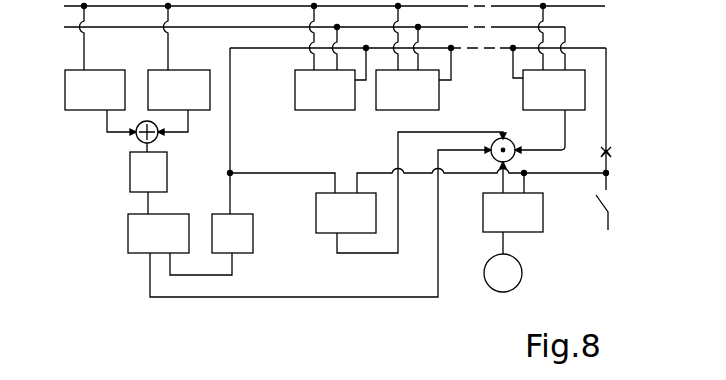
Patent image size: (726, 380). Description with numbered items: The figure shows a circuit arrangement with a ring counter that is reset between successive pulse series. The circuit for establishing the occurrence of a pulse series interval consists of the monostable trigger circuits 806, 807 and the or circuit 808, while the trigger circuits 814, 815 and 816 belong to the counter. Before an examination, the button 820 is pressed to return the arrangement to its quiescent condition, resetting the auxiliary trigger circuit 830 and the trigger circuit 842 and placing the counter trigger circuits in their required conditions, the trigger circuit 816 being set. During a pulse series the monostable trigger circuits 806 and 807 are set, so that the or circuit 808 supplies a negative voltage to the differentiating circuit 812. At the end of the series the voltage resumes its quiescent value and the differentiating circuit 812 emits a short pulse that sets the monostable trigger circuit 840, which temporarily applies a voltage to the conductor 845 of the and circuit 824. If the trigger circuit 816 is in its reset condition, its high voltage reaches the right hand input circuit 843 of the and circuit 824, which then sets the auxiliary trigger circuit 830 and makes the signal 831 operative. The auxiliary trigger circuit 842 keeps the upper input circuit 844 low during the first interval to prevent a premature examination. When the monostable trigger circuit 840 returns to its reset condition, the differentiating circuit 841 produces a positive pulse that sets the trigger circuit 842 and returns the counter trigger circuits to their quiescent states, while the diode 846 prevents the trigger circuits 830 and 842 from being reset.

The monostable trigger circuit 806 is at (95, 57).
The monostable trigger circuit 807 is at (179, 57).
The or circuit 808 is at (146, 132).
The differentiating circuit 812 is at (148, 183).
The trigger circuit 814 is at (332, 57).
The trigger circuit 815 is at (415, 57).
The trigger circuit 816 is at (548, 57).
The button 820 is at (596, 196).
The and circuit 824 is at (517, 160).
The auxiliary trigger circuit 830 is at (513, 213).
The signal 831 is at (520, 273).
The monostable trigger circuit 840 is at (180, 244).
The differentiating circuit 841 is at (232, 150).
The auxiliary trigger circuit 842 is at (418, 201).
The right hand input circuit 843 is at (549, 141).
The upper input circuit 844 is at (421, 183).
The conductor 845 is at (320, 215).
The diode 846 is at (623, 119).